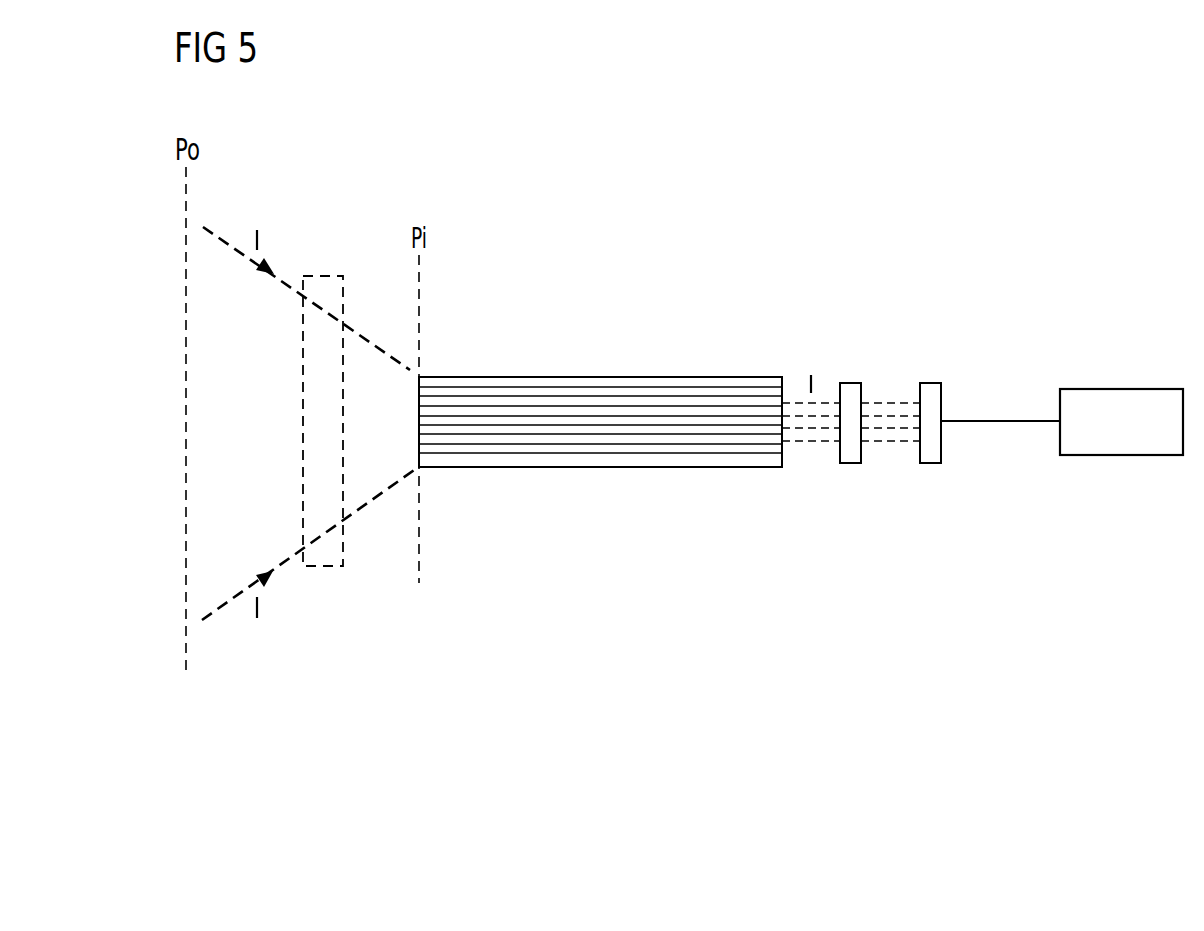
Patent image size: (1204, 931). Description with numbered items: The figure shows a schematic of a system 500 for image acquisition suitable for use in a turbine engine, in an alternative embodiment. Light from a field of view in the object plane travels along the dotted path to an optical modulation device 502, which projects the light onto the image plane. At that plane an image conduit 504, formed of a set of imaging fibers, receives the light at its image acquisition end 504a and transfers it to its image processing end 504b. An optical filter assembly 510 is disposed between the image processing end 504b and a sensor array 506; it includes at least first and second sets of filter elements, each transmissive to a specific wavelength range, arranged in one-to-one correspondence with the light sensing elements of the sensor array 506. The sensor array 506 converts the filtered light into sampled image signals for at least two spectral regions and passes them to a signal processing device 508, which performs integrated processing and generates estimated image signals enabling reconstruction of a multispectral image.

The system for image acquisition 500 is at (240, 725).
The optical modulation device 502 is at (323, 276).
The image conduit 504 is at (596, 377).
The image acquisition end 504a is at (407, 370).
The image processing end 504b is at (782, 392).
The sensor array 506 is at (930, 383).
The signal processing device 508 is at (1120, 389).
The optical filter assembly 510 is at (850, 383).